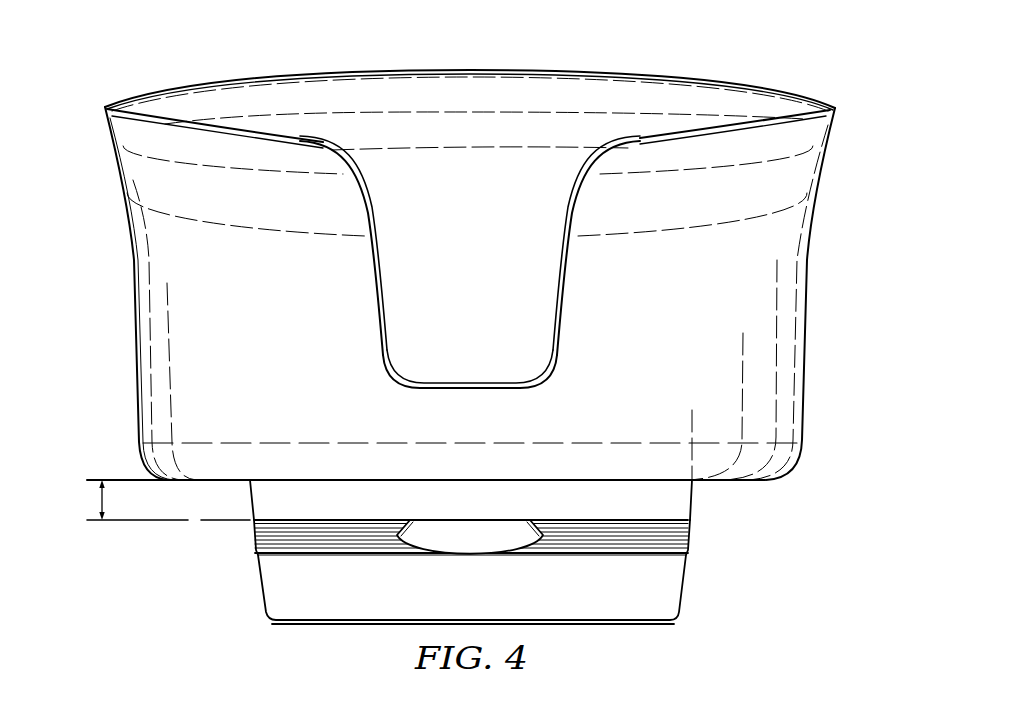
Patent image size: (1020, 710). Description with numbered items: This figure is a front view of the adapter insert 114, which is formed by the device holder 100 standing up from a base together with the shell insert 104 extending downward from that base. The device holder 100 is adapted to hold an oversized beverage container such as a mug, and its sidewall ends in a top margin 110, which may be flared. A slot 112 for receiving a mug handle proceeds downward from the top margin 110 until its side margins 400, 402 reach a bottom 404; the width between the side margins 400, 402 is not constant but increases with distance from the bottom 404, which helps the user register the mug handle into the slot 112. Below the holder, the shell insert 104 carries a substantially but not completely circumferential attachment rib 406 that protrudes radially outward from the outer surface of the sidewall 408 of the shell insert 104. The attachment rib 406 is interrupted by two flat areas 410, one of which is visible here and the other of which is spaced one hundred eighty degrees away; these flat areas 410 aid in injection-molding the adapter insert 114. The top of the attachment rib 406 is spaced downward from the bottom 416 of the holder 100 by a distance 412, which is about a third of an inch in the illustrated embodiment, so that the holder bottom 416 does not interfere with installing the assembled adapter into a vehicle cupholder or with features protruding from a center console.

The device holder 100 is at (134, 311).
The top margin 110 is at (697, 76).
The slot 112 is at (489, 290).
The adapter insert 114 is at (848, 307).
The side margin 400 is at (377, 241).
The side margin 402 is at (563, 244).
The bottom 404 is at (465, 385).
The shell insert 104 is at (266, 587).
The attachment rib 406 is at (689, 538).
The sidewall 408 is at (679, 588).
The flat area 410 is at (500, 541).
The distance 412 is at (98, 503).
The bottom 416 is at (213, 482).